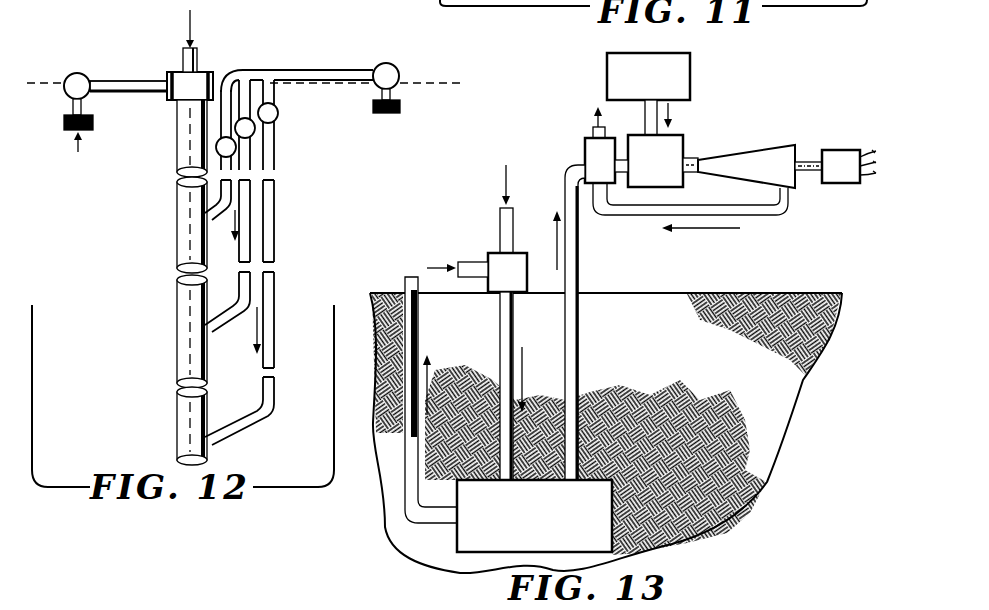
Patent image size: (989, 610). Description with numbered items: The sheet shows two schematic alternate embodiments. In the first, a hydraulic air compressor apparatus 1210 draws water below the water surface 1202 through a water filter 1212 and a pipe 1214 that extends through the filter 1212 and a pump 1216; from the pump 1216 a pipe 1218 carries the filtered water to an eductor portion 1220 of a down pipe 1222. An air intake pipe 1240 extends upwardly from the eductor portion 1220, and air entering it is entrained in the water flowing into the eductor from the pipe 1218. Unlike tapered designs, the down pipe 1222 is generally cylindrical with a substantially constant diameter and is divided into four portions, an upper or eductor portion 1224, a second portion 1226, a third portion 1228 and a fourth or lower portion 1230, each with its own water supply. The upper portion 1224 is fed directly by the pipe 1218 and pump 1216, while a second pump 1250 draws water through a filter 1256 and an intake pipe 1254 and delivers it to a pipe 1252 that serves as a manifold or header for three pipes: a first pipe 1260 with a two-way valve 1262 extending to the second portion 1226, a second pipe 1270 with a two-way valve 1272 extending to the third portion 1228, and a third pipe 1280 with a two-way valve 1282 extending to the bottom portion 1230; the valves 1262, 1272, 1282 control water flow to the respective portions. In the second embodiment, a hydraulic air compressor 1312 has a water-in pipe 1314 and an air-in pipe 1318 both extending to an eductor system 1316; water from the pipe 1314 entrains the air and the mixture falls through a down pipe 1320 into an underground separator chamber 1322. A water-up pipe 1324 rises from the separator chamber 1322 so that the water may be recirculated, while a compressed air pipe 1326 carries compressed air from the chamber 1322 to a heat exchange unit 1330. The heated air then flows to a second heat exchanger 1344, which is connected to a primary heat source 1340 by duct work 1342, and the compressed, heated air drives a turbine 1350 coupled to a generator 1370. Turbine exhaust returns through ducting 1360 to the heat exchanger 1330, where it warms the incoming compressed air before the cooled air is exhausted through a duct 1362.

In FIG. 12, the water surface 1202 is at (413, 82).
In FIG. 12, the hydraulic air compressor apparatus 1210 is at (104, 222).
In FIG. 12, the water filter 1212 is at (65, 124).
In FIG. 12, the pipe 1214 is at (73, 107).
In FIG. 12, the pump 1216 is at (68, 74).
In FIG. 12, the pipe 1218 is at (132, 82).
In FIG. 12, the eductor portion 1220 is at (170, 102).
In FIG. 12, the down pipe 1222 is at (168, 161).
In FIG. 12, the upper or eductor portion 1224 is at (177, 135).
In FIG. 12, the second portion 1226 is at (177, 218).
In FIG. 12, the third portion 1228 is at (177, 335).
In FIG. 12, the fourth or lower portion 1230 is at (177, 425).
In FIG. 12, the air intake pipe 1240 is at (200, 50).
In FIG. 12, the pump 1250 is at (375, 63).
In FIG. 12, the pipe 1252 is at (300, 70).
In FIG. 12, the intake pipe 1254 is at (391, 95).
In FIG. 12, the filter 1256 is at (402, 112).
In FIG. 12, the first pipe 1260 is at (233, 92).
In FIG. 12, the two-way valve 1262 is at (236, 147).
In FIG. 12, the second pipe 1270 is at (252, 198).
In FIG. 12, the two-way valve 1272 is at (255, 128).
In FIG. 12, the third pipe 1280 is at (274, 240).
In FIG. 12, the two-way valve 1282 is at (278, 113).
In FIG. 13, the hydraulic air compressor 1312 is at (470, 184).
In FIG. 13, the water-in pipe 1314 is at (463, 262).
In FIG. 13, the eductor system 1316 is at (488, 258).
In FIG. 13, the air-in pipe 1318 is at (500, 218).
In FIG. 13, the down pipe 1320 is at (502, 375).
In FIG. 13, the separator chamber 1322 is at (612, 498).
In FIG. 13, the water-up pipe 1324 is at (418, 320).
In FIG. 13, the compressed air pipe 1326 is at (578, 360).
In FIG. 13, the heat exchange unit 1330 is at (585, 150).
In FIG. 13, the primary heat source 1340 is at (607, 85).
In FIG. 13, the duct work 1342 is at (662, 108).
In FIG. 13, the second heat exchanger 1344 is at (687, 143).
In FIG. 13, the turbine 1350 is at (767, 147).
In FIG. 13, the ducting 1360 is at (615, 223).
In FIG. 13, the duct 1362 is at (593, 130).
In FIG. 13, the generator 1370 is at (860, 150).